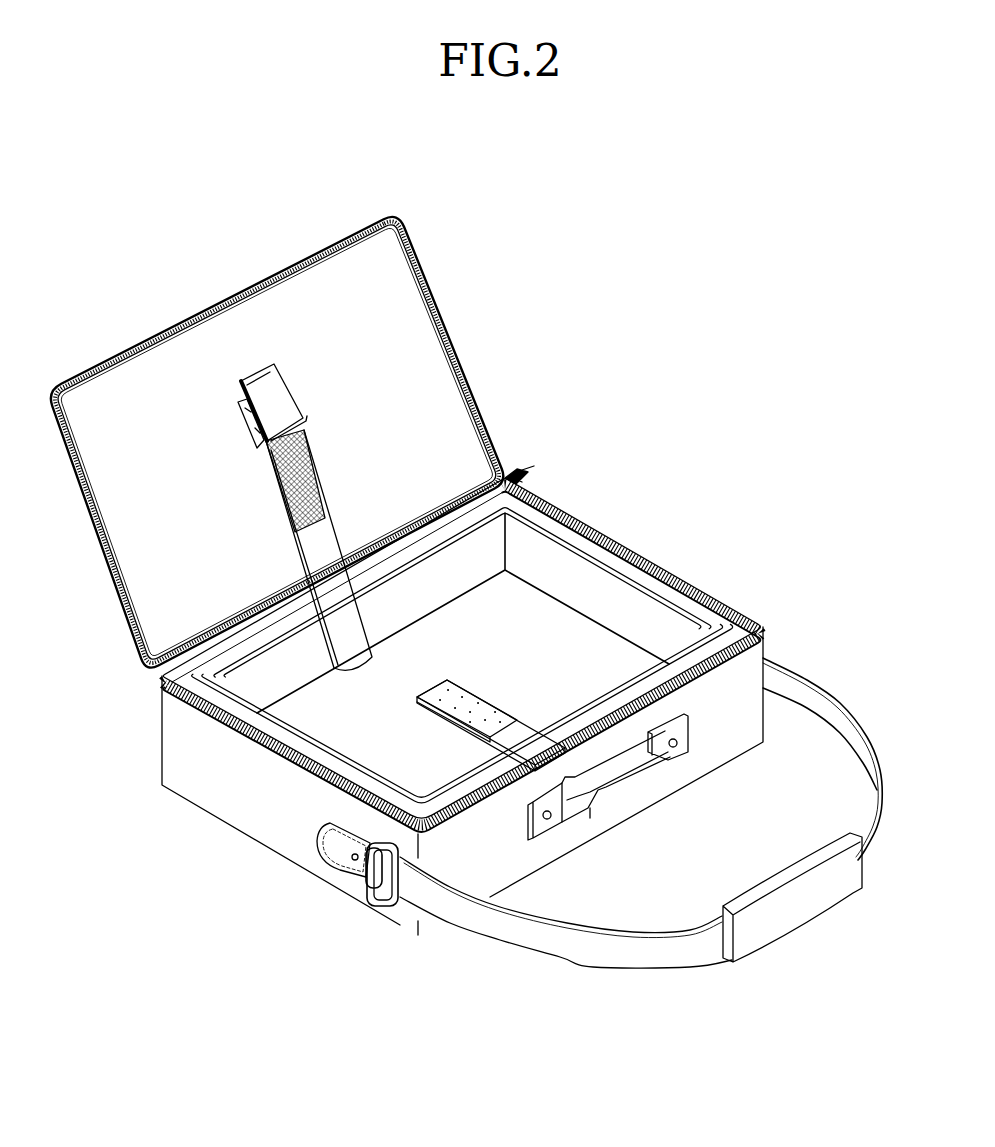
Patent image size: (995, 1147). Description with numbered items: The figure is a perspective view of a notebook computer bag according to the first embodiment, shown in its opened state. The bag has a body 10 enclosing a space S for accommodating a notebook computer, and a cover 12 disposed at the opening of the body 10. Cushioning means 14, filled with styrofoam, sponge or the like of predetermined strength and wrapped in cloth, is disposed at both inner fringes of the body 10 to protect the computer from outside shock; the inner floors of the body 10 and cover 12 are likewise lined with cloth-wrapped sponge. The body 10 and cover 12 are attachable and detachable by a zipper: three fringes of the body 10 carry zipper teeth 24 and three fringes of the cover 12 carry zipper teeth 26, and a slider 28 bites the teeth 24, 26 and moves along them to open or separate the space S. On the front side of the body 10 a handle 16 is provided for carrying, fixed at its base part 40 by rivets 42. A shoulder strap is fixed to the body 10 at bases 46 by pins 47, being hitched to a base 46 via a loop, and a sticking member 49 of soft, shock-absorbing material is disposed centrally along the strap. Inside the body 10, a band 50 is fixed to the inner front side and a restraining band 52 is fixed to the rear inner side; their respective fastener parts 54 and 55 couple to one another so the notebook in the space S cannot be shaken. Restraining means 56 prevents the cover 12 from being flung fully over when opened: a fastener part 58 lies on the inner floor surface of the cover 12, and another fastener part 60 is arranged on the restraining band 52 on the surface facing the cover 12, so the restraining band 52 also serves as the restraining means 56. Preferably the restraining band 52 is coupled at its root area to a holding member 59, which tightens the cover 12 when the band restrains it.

The body 10 is at (252, 803).
The cover 12 is at (408, 412).
The cushioning means 14 is at (572, 570).
The handle 16 is at (636, 790).
The zipper teeth 24 is at (244, 742).
The zipper teeth 26 is at (113, 585).
The slider 28 is at (530, 478).
The base part 40 is at (540, 825).
The rivets 42 is at (680, 745).
The bases 46 is at (335, 845).
The pins 47 is at (350, 858).
The sticking member 49 is at (795, 915).
The band 50 is at (531, 740).
The restraining band 52 is at (320, 548).
The fastener part 54 is at (467, 703).
The fastener part 55 is at (320, 465).
The restraining means 56 is at (309, 390).
The fastener part 58 is at (300, 405).
The holding member 59 is at (330, 625).
The fastener part 60 is at (246, 418).
The space S is at (590, 672).